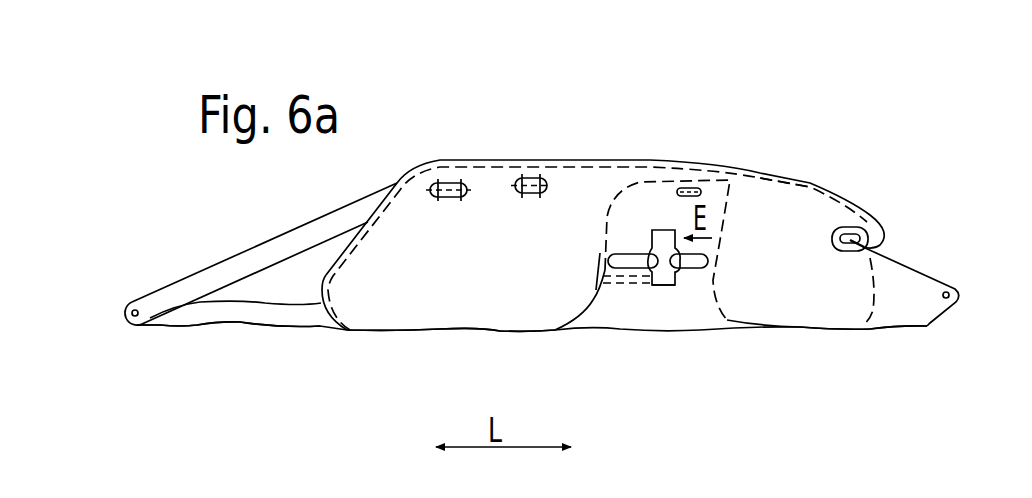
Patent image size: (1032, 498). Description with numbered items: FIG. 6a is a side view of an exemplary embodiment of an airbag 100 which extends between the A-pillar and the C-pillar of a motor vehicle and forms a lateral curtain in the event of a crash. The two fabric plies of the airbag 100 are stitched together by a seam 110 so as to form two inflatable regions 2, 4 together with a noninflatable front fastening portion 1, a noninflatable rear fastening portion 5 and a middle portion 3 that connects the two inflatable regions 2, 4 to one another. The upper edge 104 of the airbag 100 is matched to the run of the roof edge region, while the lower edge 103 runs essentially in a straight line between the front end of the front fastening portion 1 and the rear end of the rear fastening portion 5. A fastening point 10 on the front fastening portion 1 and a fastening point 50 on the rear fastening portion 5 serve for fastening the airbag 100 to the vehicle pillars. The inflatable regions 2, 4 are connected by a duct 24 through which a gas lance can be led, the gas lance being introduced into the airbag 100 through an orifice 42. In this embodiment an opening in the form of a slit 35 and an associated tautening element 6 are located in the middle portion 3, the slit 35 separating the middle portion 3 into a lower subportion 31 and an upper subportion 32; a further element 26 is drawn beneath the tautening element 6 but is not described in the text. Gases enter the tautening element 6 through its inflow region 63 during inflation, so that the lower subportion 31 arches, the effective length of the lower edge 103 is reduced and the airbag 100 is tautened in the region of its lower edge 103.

The front fastening portion 1 is at (203, 325).
The inflatable region 2 is at (435, 320).
The middle portion 3 is at (672, 317).
The inflatable region 4 is at (800, 303).
The rear fastening portion 5 is at (902, 312).
The tautening element 6 is at (667, 230).
The fastening point 10 is at (130, 310).
The duct 24 is at (658, 185).
The guide groove 26 is at (613, 283).
The lower subportion 31 is at (638, 313).
The upper subportion 32 is at (638, 220).
The slit 35 is at (700, 260).
The orifice 42 is at (876, 238).
The fastening point 50 is at (948, 290).
The inflow region 63 is at (658, 287).
The airbag 100 is at (508, 275).
The lower edge 103 is at (543, 330).
The upper edge 104 is at (562, 160).
The seam 110 is at (783, 178).